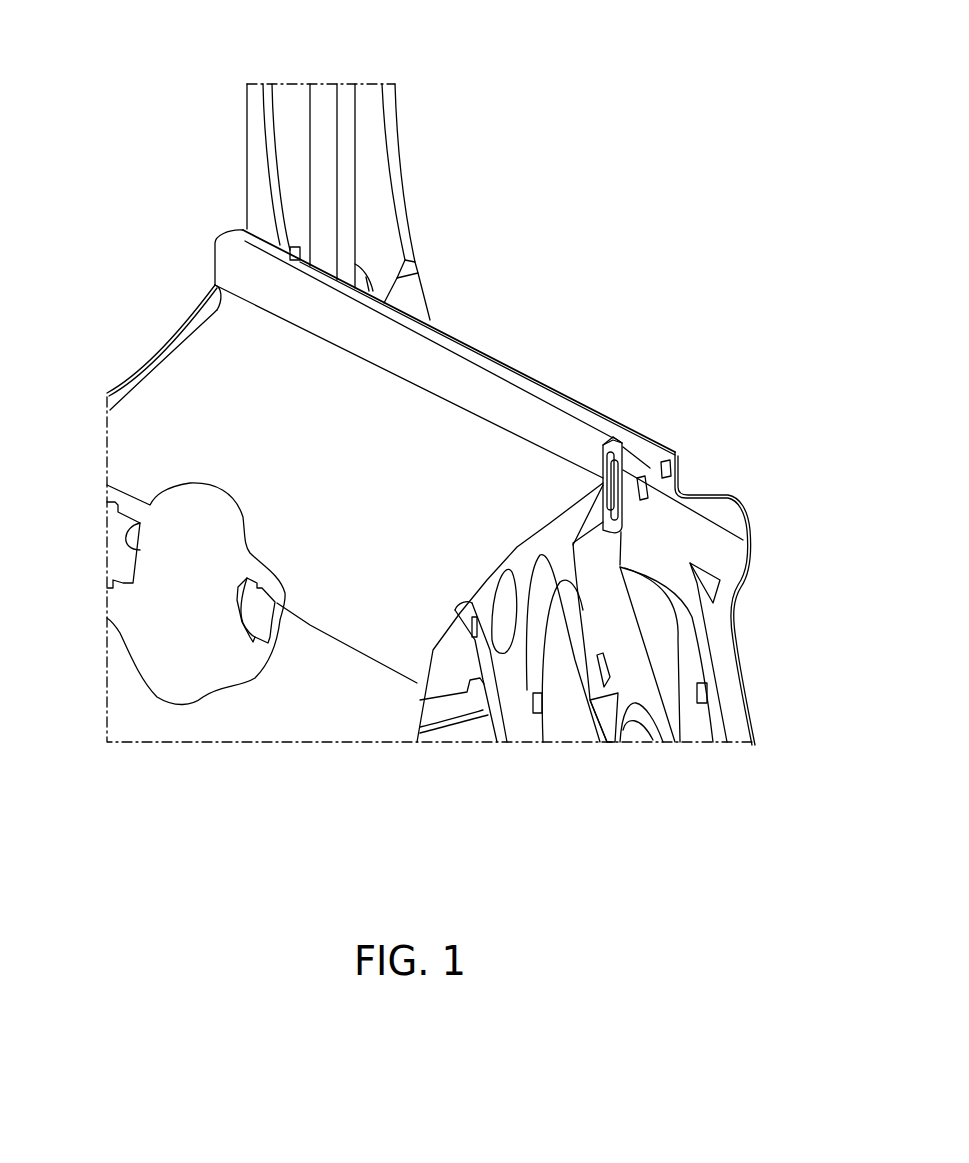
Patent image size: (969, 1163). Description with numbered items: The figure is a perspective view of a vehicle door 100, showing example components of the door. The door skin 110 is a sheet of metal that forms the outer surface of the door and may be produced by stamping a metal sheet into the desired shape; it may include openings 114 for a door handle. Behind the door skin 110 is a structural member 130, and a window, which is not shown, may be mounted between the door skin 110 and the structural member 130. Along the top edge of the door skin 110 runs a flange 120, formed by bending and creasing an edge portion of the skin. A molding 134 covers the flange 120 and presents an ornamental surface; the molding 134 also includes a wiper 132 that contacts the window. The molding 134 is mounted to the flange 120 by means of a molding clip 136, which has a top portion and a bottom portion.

The vehicle door 100 is at (178, 56).
The door skin 110 is at (155, 400).
The openings 114 is at (250, 622).
The flange 120 is at (604, 486).
The structural member 130 is at (730, 502).
The wiper 132 is at (623, 428).
The molding 134 is at (228, 263).
The molding clip 136 is at (713, 603).